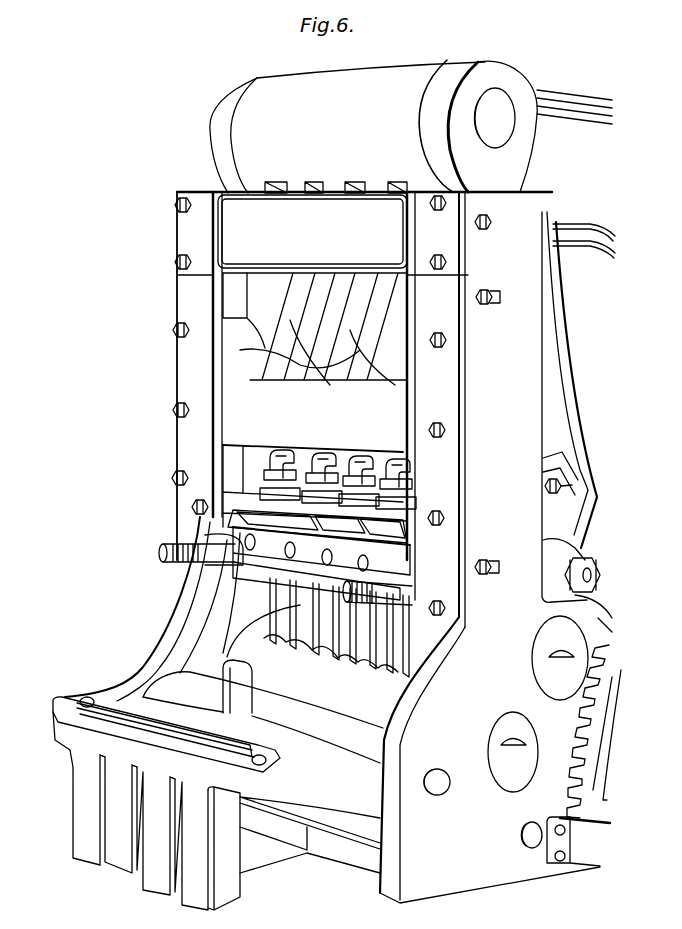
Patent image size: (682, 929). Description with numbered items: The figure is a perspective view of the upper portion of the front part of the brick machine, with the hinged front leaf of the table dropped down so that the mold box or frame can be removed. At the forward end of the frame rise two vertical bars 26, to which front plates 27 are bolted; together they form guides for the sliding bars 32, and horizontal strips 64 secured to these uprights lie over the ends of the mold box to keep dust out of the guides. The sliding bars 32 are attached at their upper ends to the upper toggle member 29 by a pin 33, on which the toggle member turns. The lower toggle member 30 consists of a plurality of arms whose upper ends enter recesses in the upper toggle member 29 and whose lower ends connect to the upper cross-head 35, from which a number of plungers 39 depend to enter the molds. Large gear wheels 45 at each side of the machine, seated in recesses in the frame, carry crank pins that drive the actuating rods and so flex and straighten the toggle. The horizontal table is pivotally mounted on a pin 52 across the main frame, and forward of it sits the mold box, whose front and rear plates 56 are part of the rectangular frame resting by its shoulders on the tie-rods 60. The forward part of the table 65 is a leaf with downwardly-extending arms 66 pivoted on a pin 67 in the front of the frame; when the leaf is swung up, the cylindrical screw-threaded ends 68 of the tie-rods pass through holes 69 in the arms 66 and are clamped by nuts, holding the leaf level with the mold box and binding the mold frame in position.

The vertical bars 26 is at (530, 328).
The front plates 27 is at (195, 357).
The upper toggle member 29 is at (275, 135).
The lower toggle member 30 is at (335, 340).
The sliding bars 32 is at (222, 107).
The pin 33 is at (497, 125).
The upper cross-head 35 is at (240, 390).
The plungers 39 is at (373, 457).
The gear wheels 45 is at (593, 743).
The pin 52 is at (590, 577).
The front and rear plates 56 is at (336, 627).
The tie-rods 60 is at (217, 567).
The horizontal strips 64 is at (247, 500).
The forward part of the table 65 is at (100, 740).
The arms 66 is at (113, 687).
The pin 67 is at (277, 740).
The cylindrical forwardly-projecting ends of the tie-rods 68 is at (163, 549).
The holes 69 is at (85, 698).